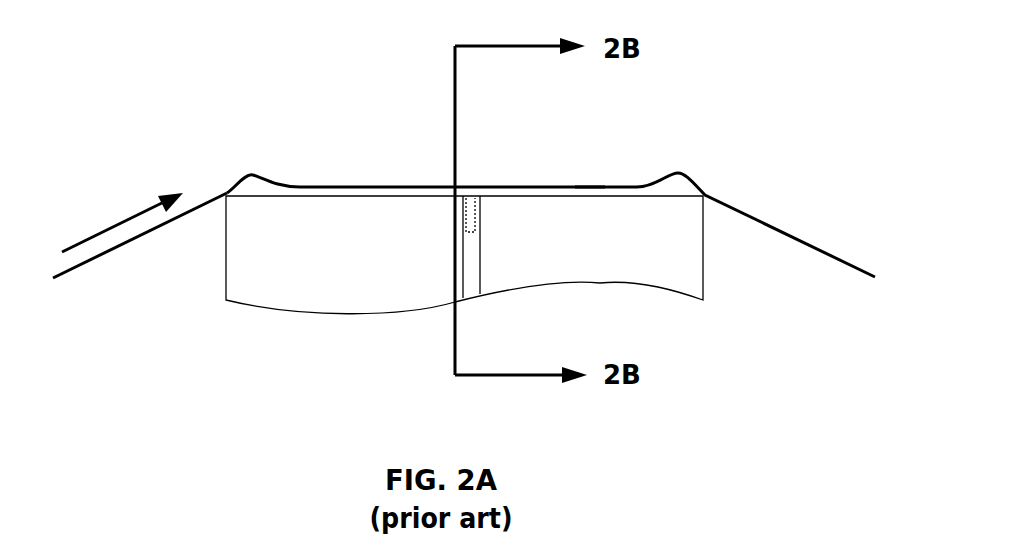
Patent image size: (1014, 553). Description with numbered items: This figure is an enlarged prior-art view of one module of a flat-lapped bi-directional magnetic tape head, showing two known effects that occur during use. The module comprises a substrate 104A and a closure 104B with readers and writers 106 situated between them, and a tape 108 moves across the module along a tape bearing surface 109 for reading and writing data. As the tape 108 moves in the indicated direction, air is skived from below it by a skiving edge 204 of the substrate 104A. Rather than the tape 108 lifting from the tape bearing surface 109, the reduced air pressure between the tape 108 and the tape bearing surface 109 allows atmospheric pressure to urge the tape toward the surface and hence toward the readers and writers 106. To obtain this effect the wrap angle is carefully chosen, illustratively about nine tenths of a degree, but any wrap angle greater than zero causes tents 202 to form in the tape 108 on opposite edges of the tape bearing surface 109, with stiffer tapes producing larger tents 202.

The substrate 104A is at (327, 297).
The closure 104B is at (612, 267).
The readers and writers 106 is at (473, 196).
The tape 108 is at (347, 186).
The tape bearing surface 109 is at (590, 178).
The tents 202 is at (243, 145).
The skiving edge 204 is at (212, 210).